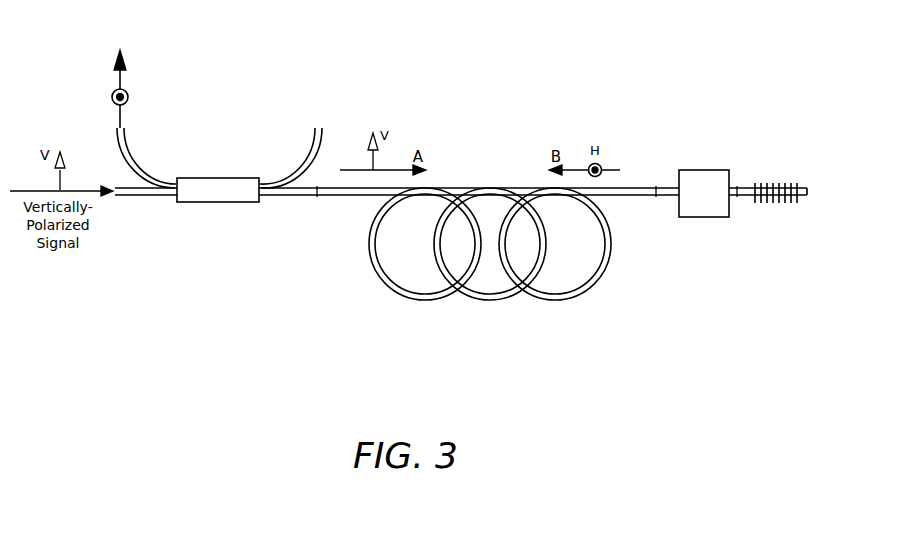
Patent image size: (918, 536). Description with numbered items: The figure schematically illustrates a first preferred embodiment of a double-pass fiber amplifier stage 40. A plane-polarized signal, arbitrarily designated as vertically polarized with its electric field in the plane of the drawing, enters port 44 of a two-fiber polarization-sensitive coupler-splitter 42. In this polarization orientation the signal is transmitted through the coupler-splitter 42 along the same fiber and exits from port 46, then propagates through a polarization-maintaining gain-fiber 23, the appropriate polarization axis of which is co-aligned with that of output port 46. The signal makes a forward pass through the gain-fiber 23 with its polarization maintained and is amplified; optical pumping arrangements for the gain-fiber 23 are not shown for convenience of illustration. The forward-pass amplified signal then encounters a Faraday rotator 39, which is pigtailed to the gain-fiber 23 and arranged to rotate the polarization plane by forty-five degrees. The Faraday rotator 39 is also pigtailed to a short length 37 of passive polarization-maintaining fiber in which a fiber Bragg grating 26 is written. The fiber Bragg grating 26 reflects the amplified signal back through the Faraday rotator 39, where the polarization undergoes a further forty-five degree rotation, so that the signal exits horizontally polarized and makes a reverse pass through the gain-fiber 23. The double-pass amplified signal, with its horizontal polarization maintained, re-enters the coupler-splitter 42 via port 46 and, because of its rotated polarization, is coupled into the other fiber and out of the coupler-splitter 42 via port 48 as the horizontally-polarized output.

The polarization-maintaining gain-fiber 23 is at (507, 298).
The fiber Bragg grating 26 is at (778, 204).
The short length of passive PM fiber 37 is at (746, 192).
The Faraday rotator 39 is at (705, 217).
The double-pass fiber amplifier stage 40 is at (247, 335).
The polarization-sensitive coupler-splitter 42 is at (201, 212).
The port 44 is at (138, 193).
The port 46 is at (305, 196).
The port 48 is at (138, 173).